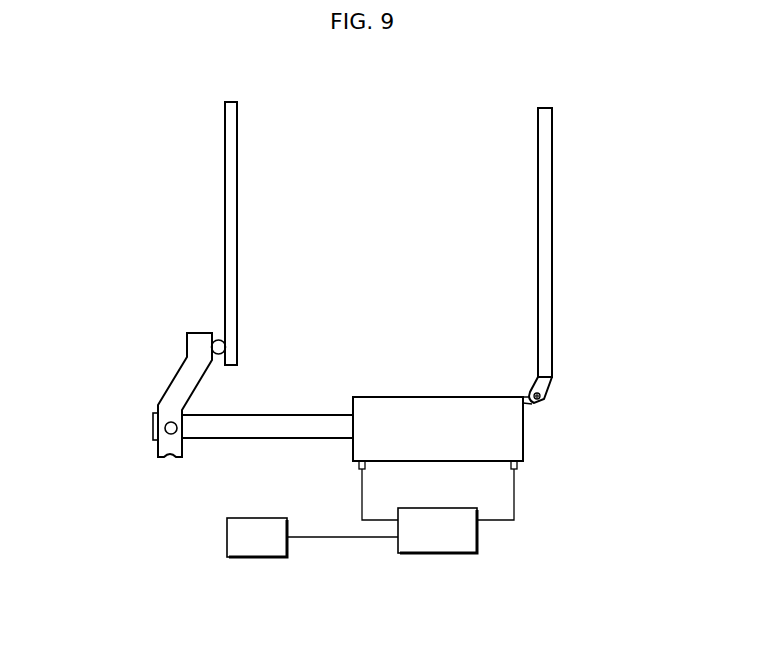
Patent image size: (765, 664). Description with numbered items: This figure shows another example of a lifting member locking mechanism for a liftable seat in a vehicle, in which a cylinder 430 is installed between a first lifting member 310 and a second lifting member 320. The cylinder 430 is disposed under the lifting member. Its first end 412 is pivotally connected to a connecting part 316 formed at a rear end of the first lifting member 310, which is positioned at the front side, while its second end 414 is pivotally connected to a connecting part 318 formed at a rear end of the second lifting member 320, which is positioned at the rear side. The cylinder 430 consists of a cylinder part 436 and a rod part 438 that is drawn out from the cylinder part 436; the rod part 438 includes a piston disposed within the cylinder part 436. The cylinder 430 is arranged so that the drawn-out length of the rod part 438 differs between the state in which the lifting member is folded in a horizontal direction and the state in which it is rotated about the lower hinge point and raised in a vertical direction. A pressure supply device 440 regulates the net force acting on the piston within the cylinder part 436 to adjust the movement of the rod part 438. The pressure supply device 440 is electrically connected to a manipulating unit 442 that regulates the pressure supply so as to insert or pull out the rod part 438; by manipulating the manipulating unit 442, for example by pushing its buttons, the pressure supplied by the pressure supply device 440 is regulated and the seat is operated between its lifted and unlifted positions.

The first lifting member 310 is at (232, 188).
The second lifting member 320 is at (545, 157).
The connecting part 316 is at (185, 383).
The connecting part 318 is at (548, 392).
The first end 412 is at (158, 427).
The second end 414 is at (543, 400).
The cylinder 430 is at (329, 402).
The cylinder part 436 is at (412, 403).
The rod part 438 is at (273, 425).
The pressure supply device 440 is at (438, 555).
The manipulating unit 442 is at (257, 558).